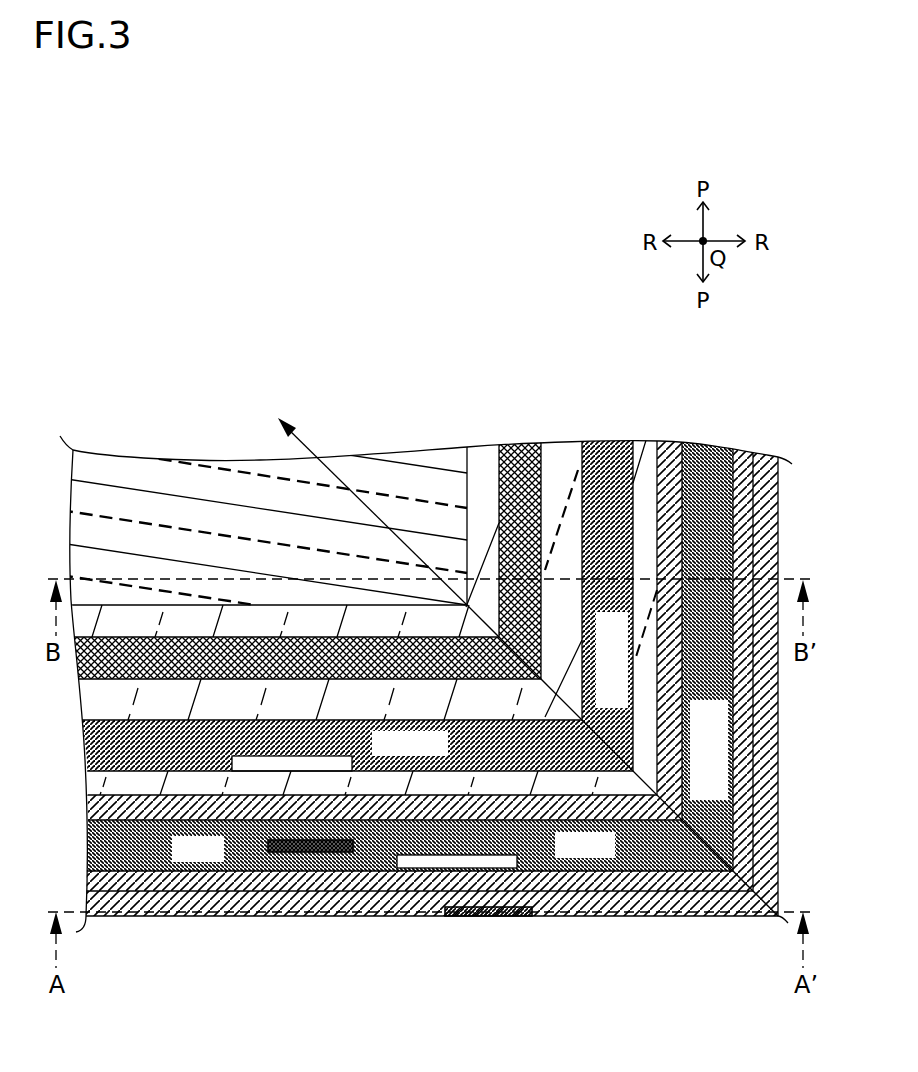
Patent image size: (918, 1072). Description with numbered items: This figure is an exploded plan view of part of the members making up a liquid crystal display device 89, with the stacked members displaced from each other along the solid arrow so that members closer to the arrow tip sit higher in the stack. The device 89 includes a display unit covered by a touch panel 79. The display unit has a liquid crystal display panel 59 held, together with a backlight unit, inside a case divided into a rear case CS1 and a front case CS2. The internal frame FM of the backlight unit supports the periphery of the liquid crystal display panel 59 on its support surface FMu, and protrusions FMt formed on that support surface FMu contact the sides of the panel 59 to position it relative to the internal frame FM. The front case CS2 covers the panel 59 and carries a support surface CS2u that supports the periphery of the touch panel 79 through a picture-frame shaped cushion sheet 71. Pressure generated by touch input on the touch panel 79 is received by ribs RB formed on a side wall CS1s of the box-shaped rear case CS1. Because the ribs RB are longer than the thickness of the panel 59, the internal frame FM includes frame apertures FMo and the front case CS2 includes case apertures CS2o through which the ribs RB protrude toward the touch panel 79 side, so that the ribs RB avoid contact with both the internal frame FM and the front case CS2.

The liquid crystal display device 89 is at (195, 279).
The touch panel 79 is at (178, 487).
The liquid crystal display panel 59 is at (565, 465).
The cushion sheet 71 is at (498, 438).
The front case CS2 is at (346, 587).
The support surface CS2u is at (607, 600).
The case aperture CS2o is at (354, 748).
The internal frame FM is at (406, 647).
The support surface FMu is at (707, 650).
The protrusion FMt is at (268, 843).
The frame aperture FMo is at (517, 857).
The rear case CS1 is at (408, 643).
The side wall CS1s is at (753, 438).
The rib RB is at (437, 925).